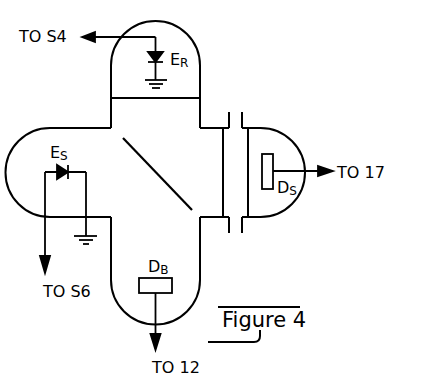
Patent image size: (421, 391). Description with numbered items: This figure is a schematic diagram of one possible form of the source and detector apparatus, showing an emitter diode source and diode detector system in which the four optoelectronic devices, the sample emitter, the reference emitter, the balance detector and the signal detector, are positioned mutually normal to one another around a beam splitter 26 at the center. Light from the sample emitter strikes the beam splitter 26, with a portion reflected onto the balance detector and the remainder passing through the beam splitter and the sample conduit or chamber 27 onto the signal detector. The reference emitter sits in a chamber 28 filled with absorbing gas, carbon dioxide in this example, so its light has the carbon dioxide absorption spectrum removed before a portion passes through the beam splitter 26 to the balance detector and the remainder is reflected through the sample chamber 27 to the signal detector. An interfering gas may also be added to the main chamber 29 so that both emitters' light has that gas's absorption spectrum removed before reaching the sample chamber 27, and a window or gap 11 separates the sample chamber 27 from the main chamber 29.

The chamber 28 is at (116, 79).
The beam splitter 26 is at (152, 165).
The main chamber 29 is at (200, 262).
The sample gap / window 11 is at (242, 113).
The sample conduit or chamber 27 is at (283, 211).